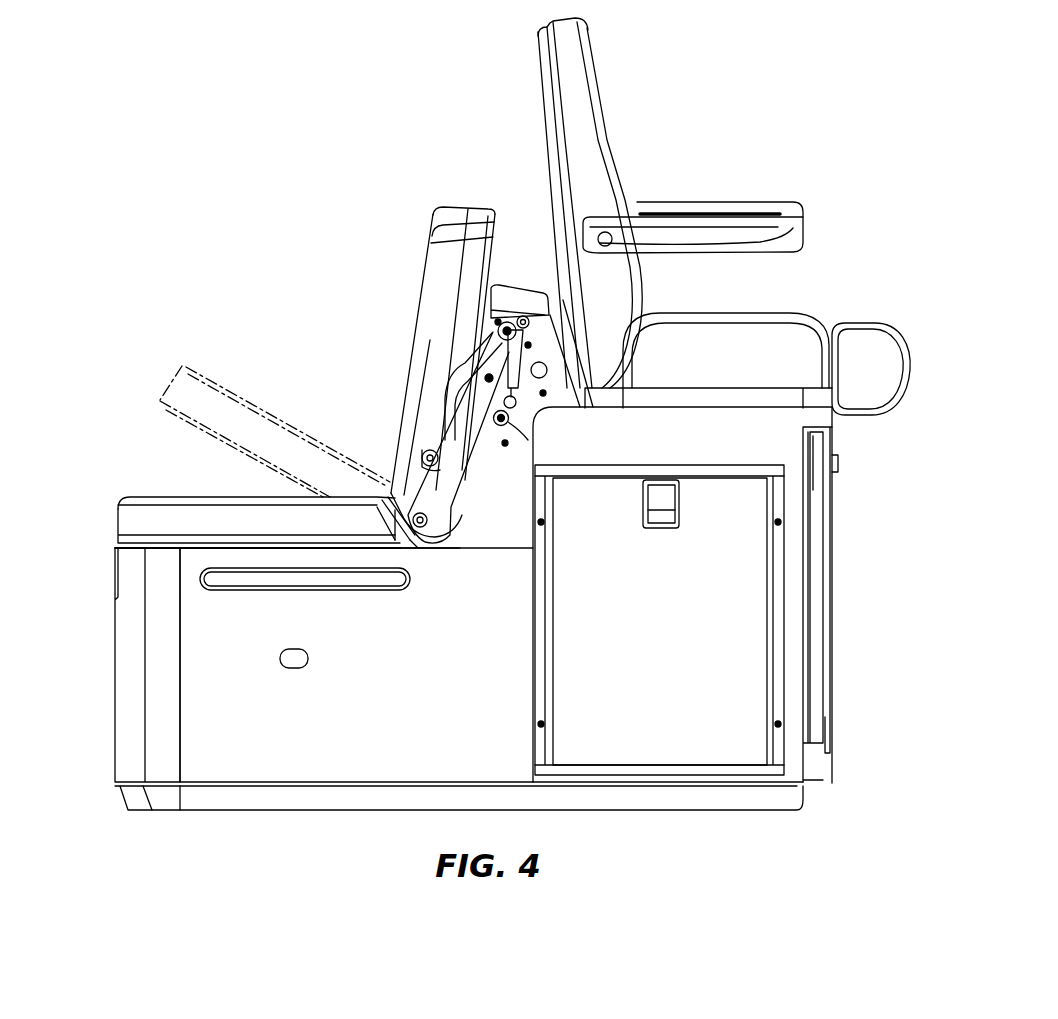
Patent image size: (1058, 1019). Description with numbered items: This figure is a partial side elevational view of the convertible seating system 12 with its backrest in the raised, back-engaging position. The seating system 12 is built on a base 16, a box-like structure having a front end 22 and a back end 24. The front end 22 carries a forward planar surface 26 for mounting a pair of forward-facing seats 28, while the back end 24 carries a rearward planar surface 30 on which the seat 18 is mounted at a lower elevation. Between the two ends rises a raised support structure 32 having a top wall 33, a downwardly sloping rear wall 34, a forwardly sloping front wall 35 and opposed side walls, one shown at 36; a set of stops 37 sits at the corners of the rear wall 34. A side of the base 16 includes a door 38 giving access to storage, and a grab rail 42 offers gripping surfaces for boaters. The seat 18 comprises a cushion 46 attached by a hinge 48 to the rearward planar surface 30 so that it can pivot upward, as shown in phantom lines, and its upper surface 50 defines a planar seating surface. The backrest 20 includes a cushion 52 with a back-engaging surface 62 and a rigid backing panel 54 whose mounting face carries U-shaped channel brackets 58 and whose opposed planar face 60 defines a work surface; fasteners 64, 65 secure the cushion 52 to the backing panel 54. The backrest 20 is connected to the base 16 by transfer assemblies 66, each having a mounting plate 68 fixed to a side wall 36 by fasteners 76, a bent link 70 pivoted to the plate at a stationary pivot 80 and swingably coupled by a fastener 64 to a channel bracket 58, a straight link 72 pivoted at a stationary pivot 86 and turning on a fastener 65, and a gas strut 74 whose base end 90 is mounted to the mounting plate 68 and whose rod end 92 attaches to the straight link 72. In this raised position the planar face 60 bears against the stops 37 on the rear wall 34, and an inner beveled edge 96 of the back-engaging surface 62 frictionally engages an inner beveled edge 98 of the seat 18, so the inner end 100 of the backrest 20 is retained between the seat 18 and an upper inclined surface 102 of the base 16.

The seating system 12 is at (362, 122).
The base 16 is at (345, 765).
The seat 18 is at (104, 476).
The adjustable backrest 20 is at (436, 190).
The front end 22 is at (852, 750).
The back end 24 is at (104, 747).
The forward planar surface 26 is at (722, 410).
The forward-facing seats 28 is at (656, 187).
The rearward planar surface 30 is at (195, 550).
The raised support structure 32 is at (513, 265).
The top wall 33 is at (523, 300).
The rear wall 34 is at (406, 404).
The front wall 35 is at (548, 345).
The side wall 36 is at (513, 460).
The stops 37 is at (494, 322).
The door 38 is at (728, 668).
The grab rail 42 is at (250, 578).
The cushion 46 is at (197, 522).
The hinge 48 is at (418, 551).
The upper surface 50 is at (157, 492).
The cushion 52 is at (466, 212).
The rigid backing panel 54 is at (490, 216).
The U-shaped channel brackets 58 is at (345, 460).
The planar face 60 is at (482, 258).
The back-engaging surface 62 is at (430, 247).
The fastener 64 is at (428, 456).
The fastener 65 is at (425, 521).
The transfer assemblies 66 is at (442, 395).
The mounting plate 68 is at (468, 328).
The bent link 70 is at (462, 410).
The straight link 72 is at (453, 474).
The gas strut 74 is at (630, 340).
The fasteners 76 is at (506, 370).
The pivot 80 is at (492, 318).
The pivot 86 is at (503, 420).
The base end 90 is at (545, 325).
The rod end 92 is at (603, 355).
The inner beveled edge 96 is at (390, 533).
The inner beveled edge 98 is at (398, 508).
The inner end 100 is at (427, 533).
The upper inclined surface 102 is at (512, 498).